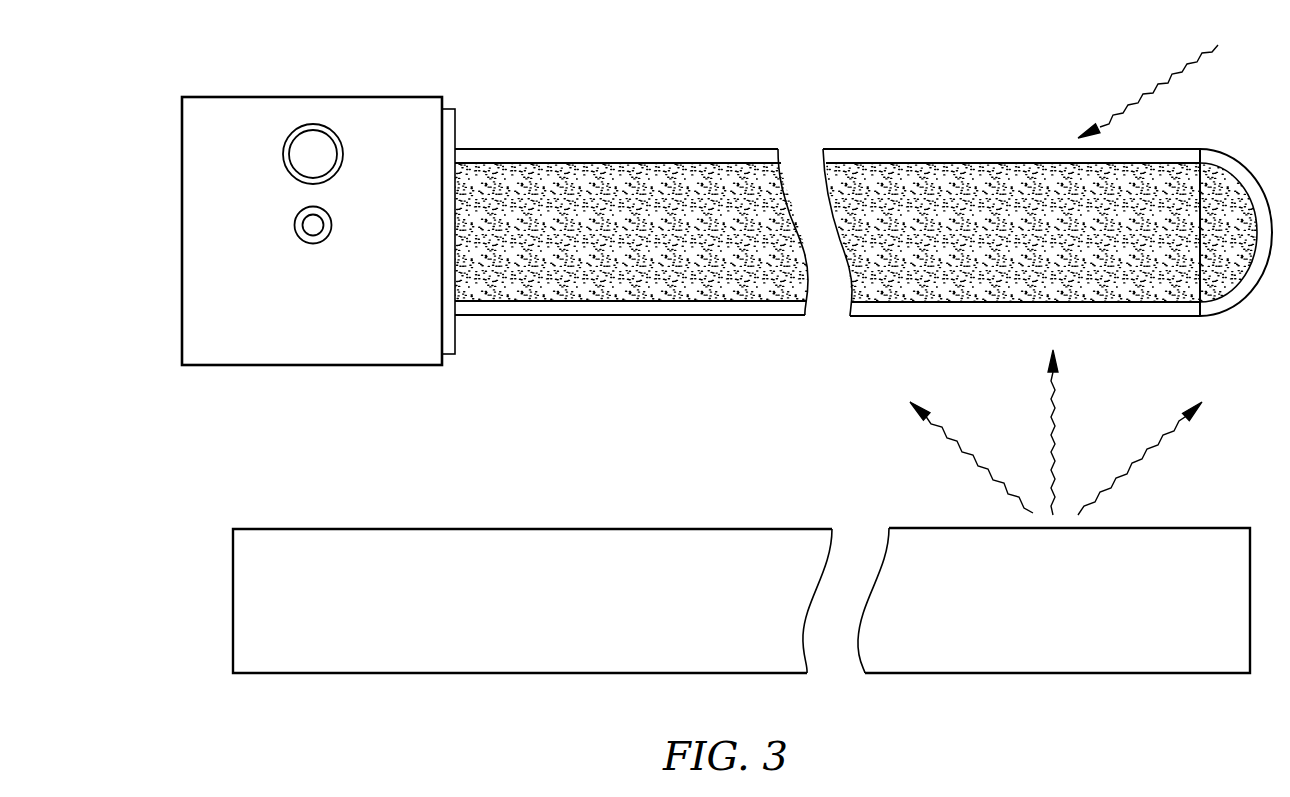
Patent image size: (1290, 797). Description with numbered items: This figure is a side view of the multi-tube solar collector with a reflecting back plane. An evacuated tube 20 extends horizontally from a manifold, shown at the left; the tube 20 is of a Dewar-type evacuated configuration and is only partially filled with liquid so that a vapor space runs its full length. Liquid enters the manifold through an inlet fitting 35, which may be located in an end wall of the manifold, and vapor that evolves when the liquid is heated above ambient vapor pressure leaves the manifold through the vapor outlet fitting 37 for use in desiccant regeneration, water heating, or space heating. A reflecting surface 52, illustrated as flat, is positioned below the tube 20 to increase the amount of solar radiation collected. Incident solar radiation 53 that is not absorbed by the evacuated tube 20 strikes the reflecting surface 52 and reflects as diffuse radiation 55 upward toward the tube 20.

The tube 20 is at (671, 149).
The vapor outlet fitting 37 is at (344, 148).
The inlet fitting 35 is at (313, 243).
The incident solar radiation 53 is at (1165, 82).
The reflecting surface 52 is at (557, 548).
The diffuse radiation 55 is at (1149, 499).